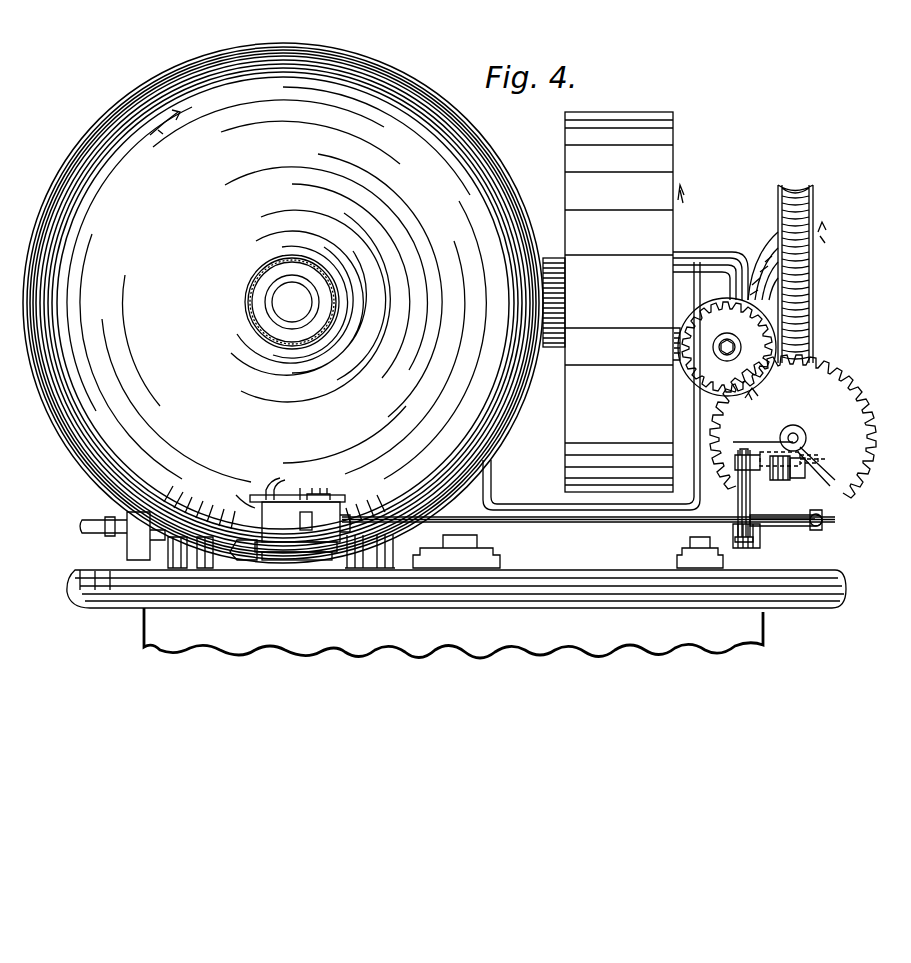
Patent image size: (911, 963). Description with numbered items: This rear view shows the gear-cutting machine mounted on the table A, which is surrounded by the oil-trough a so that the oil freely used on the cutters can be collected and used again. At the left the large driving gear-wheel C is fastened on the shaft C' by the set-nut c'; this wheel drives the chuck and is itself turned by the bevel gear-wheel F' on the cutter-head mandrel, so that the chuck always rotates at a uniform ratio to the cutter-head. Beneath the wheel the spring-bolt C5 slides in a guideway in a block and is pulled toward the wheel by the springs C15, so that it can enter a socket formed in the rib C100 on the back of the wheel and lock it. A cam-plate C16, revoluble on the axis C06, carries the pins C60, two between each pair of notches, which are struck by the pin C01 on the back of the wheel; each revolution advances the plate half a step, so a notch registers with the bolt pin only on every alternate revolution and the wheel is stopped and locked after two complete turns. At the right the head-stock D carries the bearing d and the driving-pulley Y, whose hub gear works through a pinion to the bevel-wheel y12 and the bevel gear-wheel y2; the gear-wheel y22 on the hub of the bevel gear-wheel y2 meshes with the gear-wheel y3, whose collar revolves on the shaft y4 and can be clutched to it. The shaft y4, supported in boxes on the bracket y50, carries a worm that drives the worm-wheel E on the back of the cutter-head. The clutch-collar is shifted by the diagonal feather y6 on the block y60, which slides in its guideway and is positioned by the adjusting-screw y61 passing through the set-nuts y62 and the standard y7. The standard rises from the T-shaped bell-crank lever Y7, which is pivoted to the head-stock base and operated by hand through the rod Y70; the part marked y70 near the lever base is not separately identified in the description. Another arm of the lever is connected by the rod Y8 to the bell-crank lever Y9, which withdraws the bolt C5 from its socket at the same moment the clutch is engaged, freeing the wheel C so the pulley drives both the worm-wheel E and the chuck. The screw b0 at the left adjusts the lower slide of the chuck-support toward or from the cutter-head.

The driving gear-wheel C is at (283, 303).
The set-nut c' is at (328, 285).
The shaft C' is at (292, 302).
The rib C100 is at (370, 490).
The cam-plate C16 is at (235, 485).
The pins C60 is at (266, 477).
The axis C06 is at (301, 481).
The pin or lug C01 is at (327, 482).
The springs C15 is at (300, 521).
The spring-bolt C5 is at (322, 531).
The bevel gear-wheel F' is at (550, 277).
The driving-pulley Y is at (624, 302).
The box or bearing d is at (703, 262).
The worm-wheel E is at (778, 204).
The bevel gear-wheel y2 is at (698, 318).
The gear-wheel y22 is at (723, 341).
The bevel-wheel y12 is at (676, 340).
The gear-wheel y3 is at (793, 426).
The shaft y4 is at (803, 430).
The adjusting-screw y61 is at (776, 442).
The set-nuts y62 is at (744, 449).
The bracket y50 is at (818, 458).
The feather y6 is at (770, 470).
The block y60 is at (786, 478).
The standard y7 is at (738, 493).
The T-shaped bell-crank lever Y7 is at (795, 532).
The rod Y70 is at (824, 519).
The lever base block y70 is at (755, 545).
The head-stock D is at (488, 472).
The rod Y8 is at (588, 537).
The bell-crank lever Y9 is at (448, 546).
The screw b0 is at (82, 524).
The table A is at (145, 568).
The oil-trough a is at (88, 600).